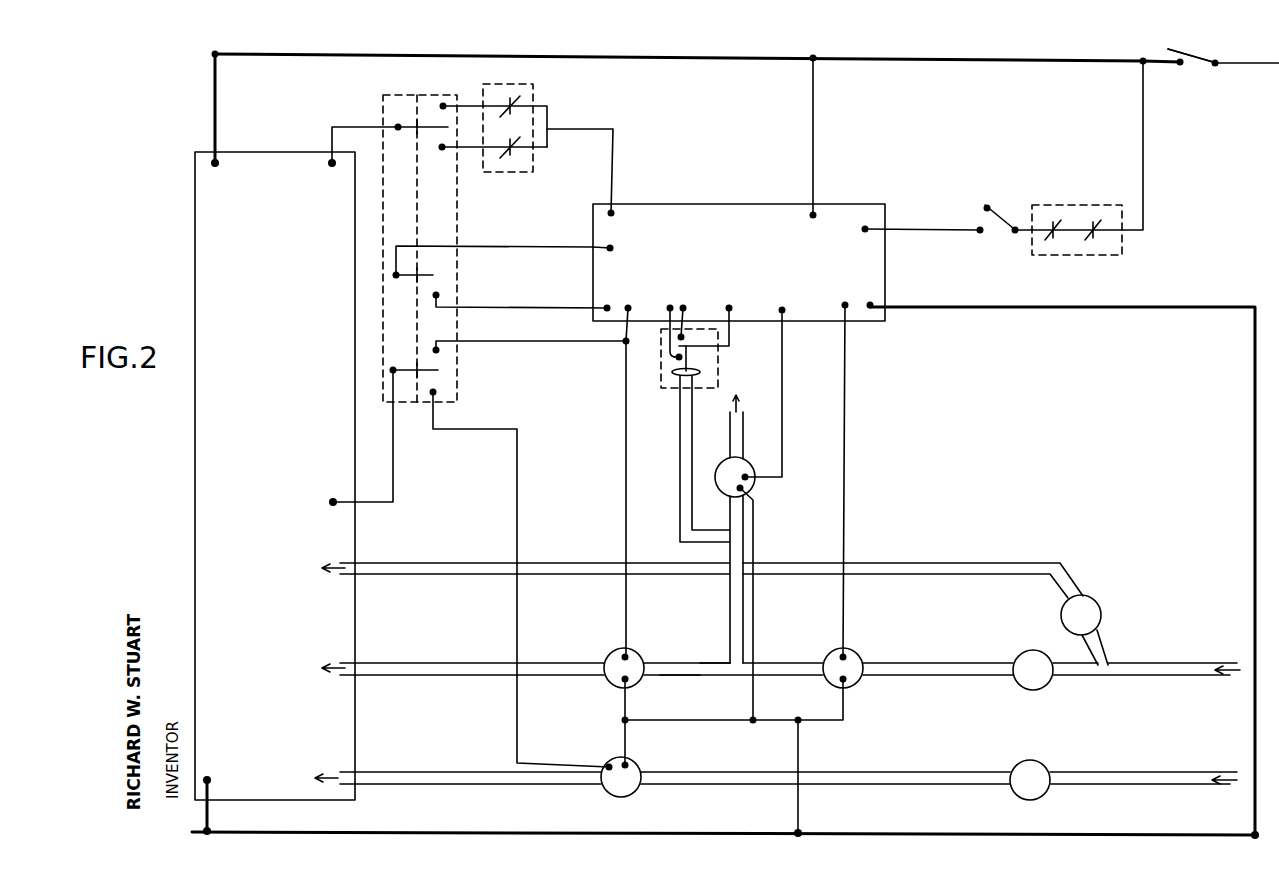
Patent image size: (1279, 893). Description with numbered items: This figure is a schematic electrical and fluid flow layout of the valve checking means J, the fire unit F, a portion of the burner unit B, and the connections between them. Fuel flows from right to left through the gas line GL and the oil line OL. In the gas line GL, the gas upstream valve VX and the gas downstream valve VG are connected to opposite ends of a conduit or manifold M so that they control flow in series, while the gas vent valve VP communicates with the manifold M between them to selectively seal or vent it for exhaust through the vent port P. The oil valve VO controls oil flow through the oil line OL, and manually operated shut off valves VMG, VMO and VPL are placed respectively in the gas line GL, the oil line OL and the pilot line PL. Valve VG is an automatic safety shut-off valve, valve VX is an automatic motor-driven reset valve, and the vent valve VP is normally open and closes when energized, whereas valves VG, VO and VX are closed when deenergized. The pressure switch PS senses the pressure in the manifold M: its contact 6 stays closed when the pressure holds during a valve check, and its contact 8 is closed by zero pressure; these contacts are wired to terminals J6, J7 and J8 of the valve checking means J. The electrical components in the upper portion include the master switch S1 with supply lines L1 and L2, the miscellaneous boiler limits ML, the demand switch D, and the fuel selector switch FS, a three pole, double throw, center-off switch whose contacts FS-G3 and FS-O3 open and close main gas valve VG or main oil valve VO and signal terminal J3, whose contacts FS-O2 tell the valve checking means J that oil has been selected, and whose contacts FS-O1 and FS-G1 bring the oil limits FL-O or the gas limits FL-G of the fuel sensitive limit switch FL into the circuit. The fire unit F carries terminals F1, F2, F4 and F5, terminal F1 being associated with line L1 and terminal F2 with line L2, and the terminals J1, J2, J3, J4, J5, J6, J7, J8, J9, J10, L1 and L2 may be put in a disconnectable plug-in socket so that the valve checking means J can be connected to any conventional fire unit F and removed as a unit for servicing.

The fire unit F is at (247, 471).
The terminal F1 is at (218, 165).
The terminal F2 is at (209, 780).
The furnace terminal F4 is at (334, 166).
The furnace terminal F5 is at (332, 505).
The fuel selector switch FS is at (455, 258).
The gas selector contacts FS-G1 is at (443, 104).
The oil selector contacts FS-O1 is at (442, 150).
The oil selector contacts FS-O2 is at (440, 296).
The gas selector contacts FS-G3 is at (440, 352).
The oil selector contacts FS-O3 is at (440, 392).
The fuel sensitive limit switch FL is at (533, 175).
The gas fuel sensitive limits FL-G is at (515, 95).
The oil fuel sensitive limits FL-O is at (520, 152).
The valve checking means J is at (736, 266).
The terminal J1 is at (866, 231).
The terminal J2 is at (613, 214).
The terminal J3 is at (629, 306).
The terminal J4 is at (844, 303).
The terminal J5 is at (782, 308).
The terminal J6 is at (684, 308).
The terminal J7 is at (730, 306).
The terminal J8 is at (671, 306).
The terminal J9 is at (612, 249).
The terminal J10 is at (608, 306).
The line L1 is at (1228, 62).
The line L2 is at (870, 303).
The master switch S1 is at (1185, 56).
The demand switch D is at (1008, 236).
The miscellaneous limits ML is at (1090, 180).
The pressure switch PS is at (720, 378).
The pressure switch contact 6 is at (681, 337).
The pressure switch contact 8 is at (676, 358).
The vent port P is at (744, 424).
The gas vent valve VP is at (717, 468).
The pilot line PL is at (416, 562).
The pilot line shut off valve VPL is at (1100, 605).
The gas line GL is at (410, 661).
The gas downstream valve VG is at (606, 652).
The gas upstream valve VX is at (851, 655).
The main gas line shut off valve VMG is at (1016, 658).
The burner unit B is at (684, 654).
The conduit or manifold M is at (680, 677).
The oil line OL is at (410, 771).
The oil valve VO is at (633, 760).
The oil line shut off valve VMO is at (1015, 767).